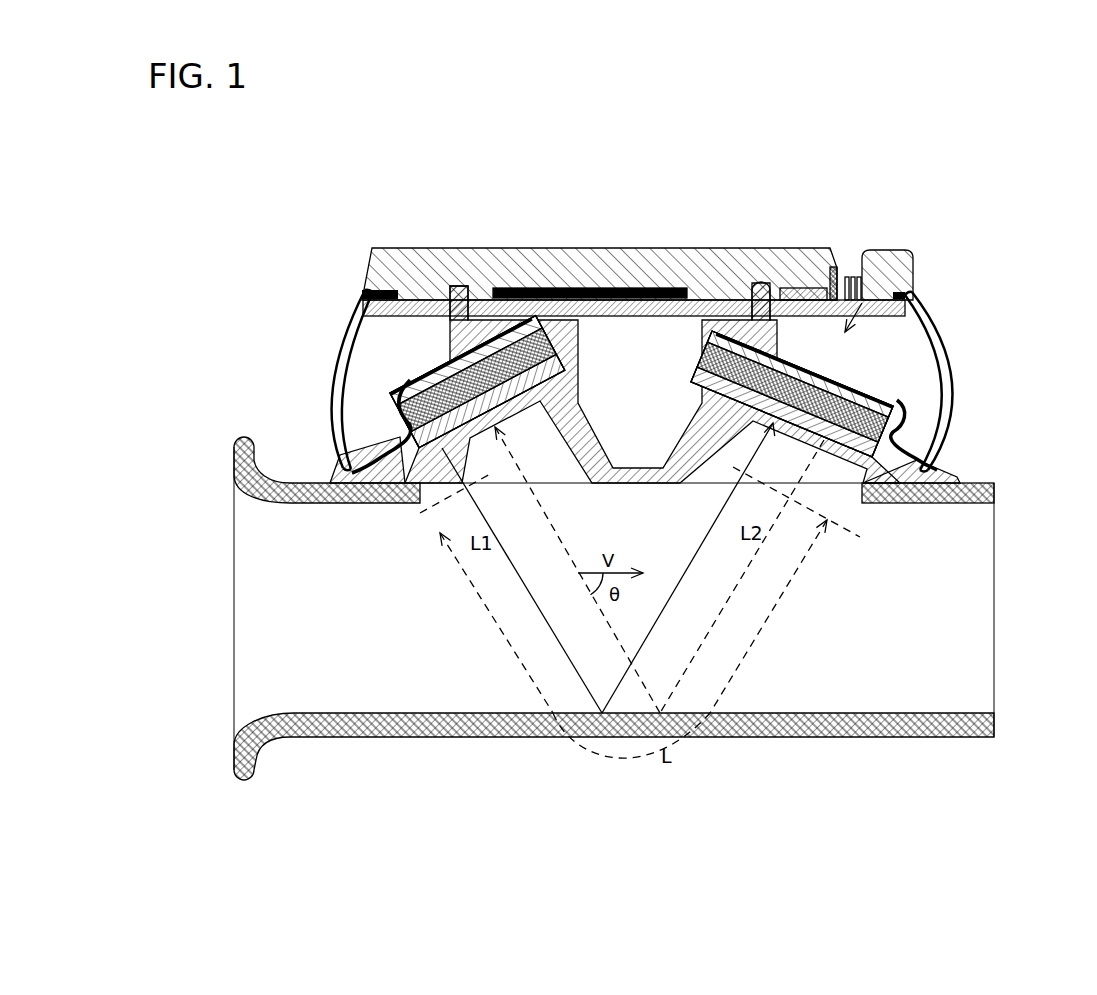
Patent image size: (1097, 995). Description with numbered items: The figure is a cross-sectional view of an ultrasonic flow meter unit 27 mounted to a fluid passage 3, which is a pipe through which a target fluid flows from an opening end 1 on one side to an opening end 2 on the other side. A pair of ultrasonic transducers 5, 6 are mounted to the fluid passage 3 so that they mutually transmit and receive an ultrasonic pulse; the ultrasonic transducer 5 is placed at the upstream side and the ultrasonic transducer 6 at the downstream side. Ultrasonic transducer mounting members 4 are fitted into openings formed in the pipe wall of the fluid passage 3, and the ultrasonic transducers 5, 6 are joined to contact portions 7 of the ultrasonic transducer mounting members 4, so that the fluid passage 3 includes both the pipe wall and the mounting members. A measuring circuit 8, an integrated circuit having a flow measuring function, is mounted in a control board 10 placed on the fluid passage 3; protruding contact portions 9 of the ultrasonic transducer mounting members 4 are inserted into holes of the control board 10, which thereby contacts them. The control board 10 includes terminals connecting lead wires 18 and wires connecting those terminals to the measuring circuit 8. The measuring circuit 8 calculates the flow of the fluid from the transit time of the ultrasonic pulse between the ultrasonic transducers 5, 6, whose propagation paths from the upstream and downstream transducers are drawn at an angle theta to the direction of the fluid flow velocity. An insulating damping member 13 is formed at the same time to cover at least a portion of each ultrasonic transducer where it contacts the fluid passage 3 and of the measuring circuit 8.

The opening end 1 is at (263, 593).
The opening end 2 is at (957, 603).
The fluid passage 3 is at (236, 440).
The ultrasonic transducer mounting member 4 is at (445, 352).
The ultrasonic transducer 5 is at (375, 360).
The ultrasonic transducer 6 is at (903, 270).
The contact portion 7 is at (547, 377).
The measuring circuit 8 is at (633, 298).
The protruding contact portion 9 is at (453, 320).
The control board 10 is at (705, 318).
The insulating damping member 13 is at (390, 402).
The lead wire 18 is at (350, 298).
The ultrasonic flow meter unit 27 is at (857, 223).